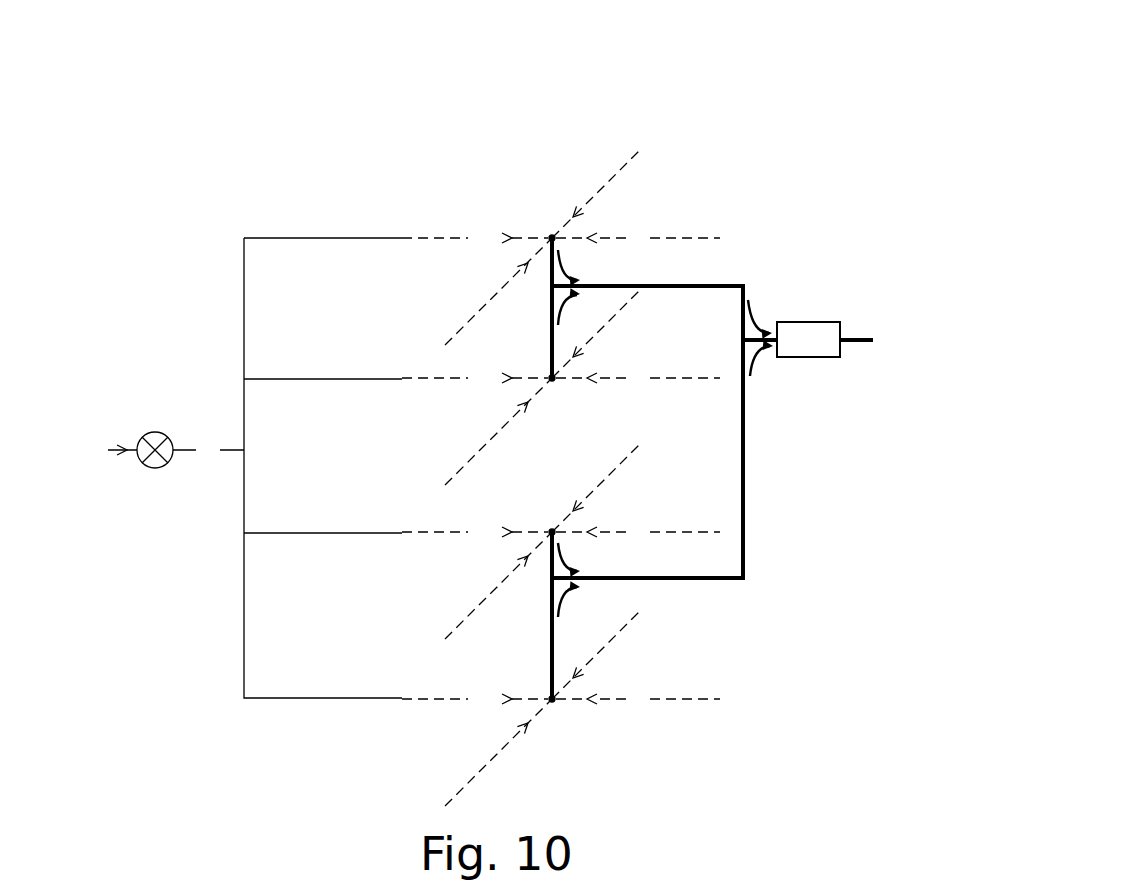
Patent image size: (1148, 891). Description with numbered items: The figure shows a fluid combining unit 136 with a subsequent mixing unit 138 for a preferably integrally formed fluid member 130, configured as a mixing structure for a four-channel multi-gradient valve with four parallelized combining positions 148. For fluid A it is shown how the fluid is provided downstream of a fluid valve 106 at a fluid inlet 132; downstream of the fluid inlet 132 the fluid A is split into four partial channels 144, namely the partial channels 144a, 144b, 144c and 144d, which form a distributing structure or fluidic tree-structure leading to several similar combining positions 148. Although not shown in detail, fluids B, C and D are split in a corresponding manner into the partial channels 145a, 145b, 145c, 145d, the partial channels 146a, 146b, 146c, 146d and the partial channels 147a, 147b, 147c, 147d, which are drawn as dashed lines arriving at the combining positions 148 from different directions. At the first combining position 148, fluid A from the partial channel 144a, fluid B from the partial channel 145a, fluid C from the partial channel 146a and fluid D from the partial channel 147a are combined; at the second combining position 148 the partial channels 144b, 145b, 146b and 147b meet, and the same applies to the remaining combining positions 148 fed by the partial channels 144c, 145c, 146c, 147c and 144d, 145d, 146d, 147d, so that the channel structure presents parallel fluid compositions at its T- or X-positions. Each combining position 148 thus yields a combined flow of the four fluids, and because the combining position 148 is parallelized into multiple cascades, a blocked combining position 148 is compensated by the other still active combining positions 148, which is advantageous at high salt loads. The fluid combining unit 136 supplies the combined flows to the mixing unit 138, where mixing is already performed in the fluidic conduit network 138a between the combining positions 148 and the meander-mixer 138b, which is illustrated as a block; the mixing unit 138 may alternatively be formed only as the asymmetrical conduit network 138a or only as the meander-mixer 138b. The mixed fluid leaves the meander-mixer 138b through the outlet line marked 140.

The fluid member 130 is at (738, 76).
The fluid valve 106 is at (155, 432).
The fluid inlet 132 is at (178, 455).
The partial channels 144 is at (272, 240).
The partial channel 144a is at (365, 237).
The partial channel 144b is at (383, 378).
The partial channel 144c is at (383, 532).
The partial channel 144d is at (383, 698).
The partial channel 145a is at (470, 320).
The partial channel 145b is at (470, 461).
The partial channel 145c is at (470, 615).
The partial channel 145d is at (478, 773).
The partial channel 146a is at (700, 237).
The partial channel 146b is at (703, 377).
The partial channel 146c is at (703, 531).
The partial channel 146d is at (712, 698).
The partial channel 147a is at (623, 166).
The partial channel 147b is at (627, 304).
The partial channel 147c is at (625, 458).
The partial channel 147d is at (625, 626).
The combining position 148 is at (549, 234).
The fluid combining unit 136 is at (545, 265).
The mixing unit 138 is at (748, 282).
The fluidic conduit network 138a is at (570, 248).
The meander-mixer 138b is at (808, 339).
The outlet 140 is at (852, 343).